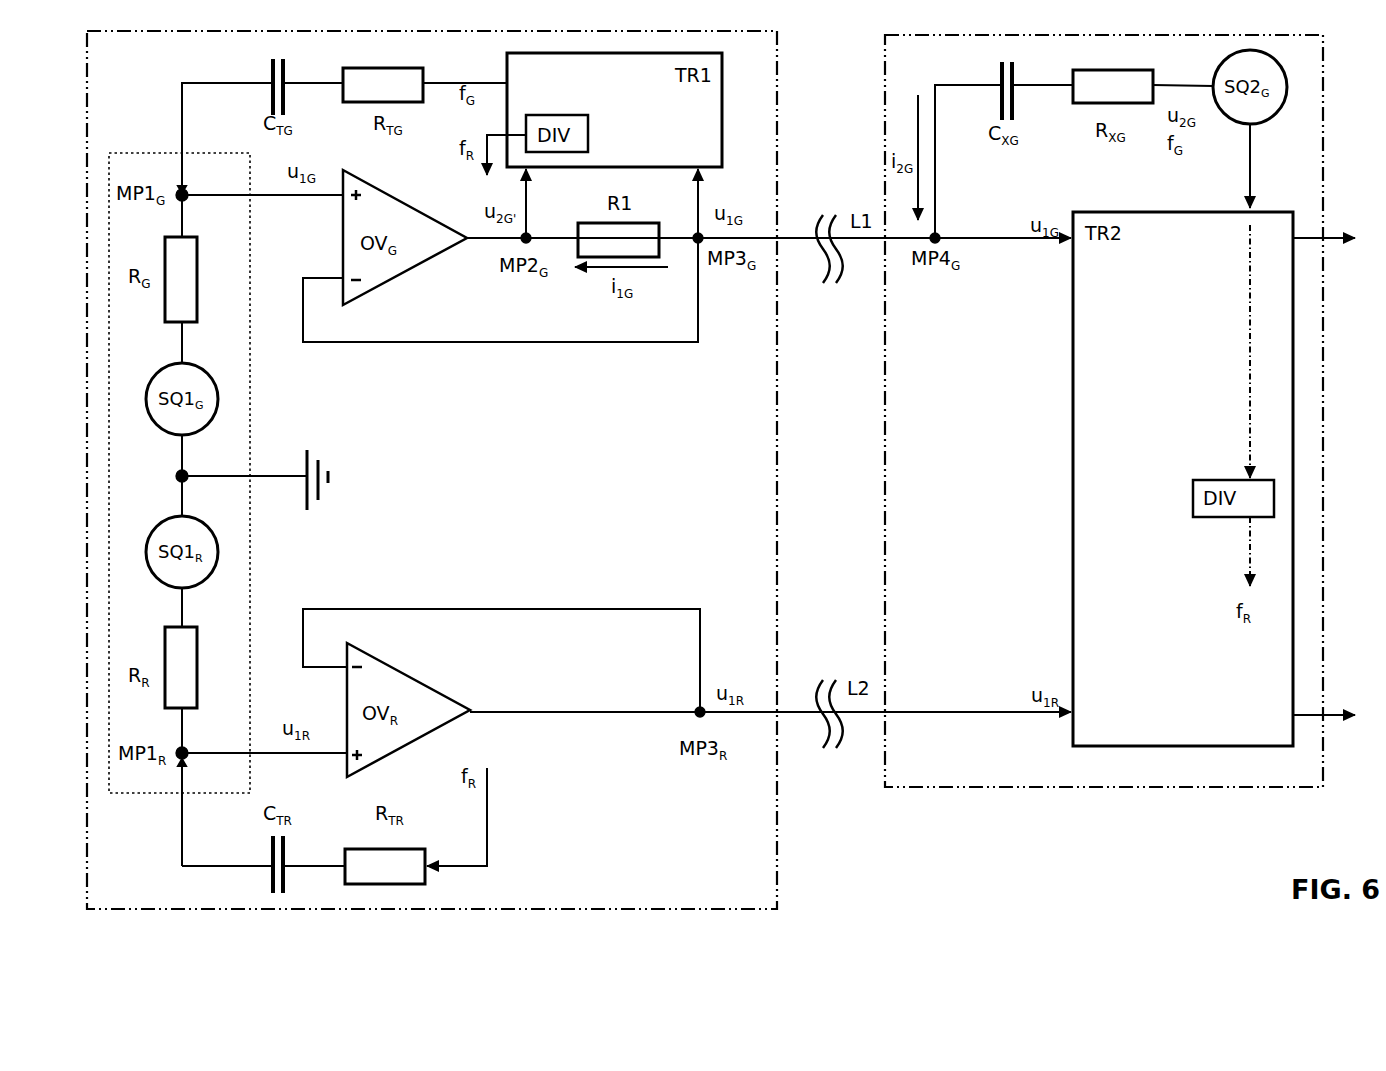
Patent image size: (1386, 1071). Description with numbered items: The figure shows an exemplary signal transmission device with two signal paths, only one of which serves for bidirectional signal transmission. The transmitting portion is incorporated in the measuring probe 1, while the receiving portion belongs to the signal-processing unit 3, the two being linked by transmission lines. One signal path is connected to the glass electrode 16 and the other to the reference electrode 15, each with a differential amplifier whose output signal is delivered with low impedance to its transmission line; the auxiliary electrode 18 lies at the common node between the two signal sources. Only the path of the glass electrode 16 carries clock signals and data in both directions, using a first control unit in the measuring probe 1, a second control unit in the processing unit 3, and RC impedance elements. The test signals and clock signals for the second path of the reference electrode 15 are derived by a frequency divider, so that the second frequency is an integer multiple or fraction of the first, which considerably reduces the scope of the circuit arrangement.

The measuring probe 1 is at (764, 899).
The signal-processing unit 3 is at (903, 776).
The reference electrode 15 is at (188, 733).
The glass electrode 16 is at (187, 208).
The auxiliary electrode 18 is at (203, 484).